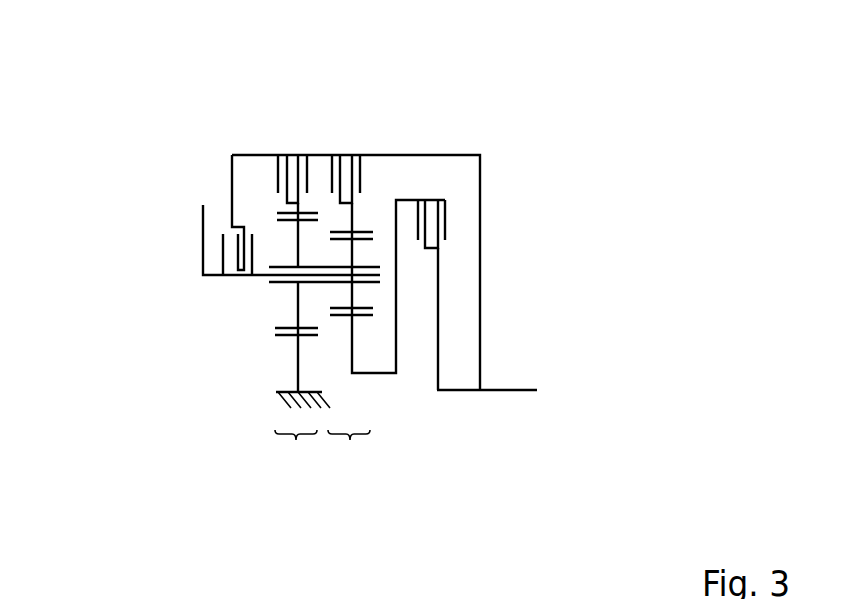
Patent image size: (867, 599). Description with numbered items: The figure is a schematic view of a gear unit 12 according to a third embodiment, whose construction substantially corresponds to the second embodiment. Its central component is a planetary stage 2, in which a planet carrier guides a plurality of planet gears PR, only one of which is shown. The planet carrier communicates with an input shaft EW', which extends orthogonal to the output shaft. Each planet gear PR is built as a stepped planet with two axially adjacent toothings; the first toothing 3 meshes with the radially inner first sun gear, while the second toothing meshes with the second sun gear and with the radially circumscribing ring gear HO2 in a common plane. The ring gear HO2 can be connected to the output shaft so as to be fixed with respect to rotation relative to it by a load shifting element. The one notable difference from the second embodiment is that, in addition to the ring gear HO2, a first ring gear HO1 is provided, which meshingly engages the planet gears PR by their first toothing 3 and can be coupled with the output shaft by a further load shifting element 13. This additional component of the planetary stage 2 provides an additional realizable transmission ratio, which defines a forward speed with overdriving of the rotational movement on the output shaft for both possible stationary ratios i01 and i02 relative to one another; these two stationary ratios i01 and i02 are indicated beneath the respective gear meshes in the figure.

The gear unit 12 is at (165, 123).
The load shifting element 13 is at (292, 153).
The planetary stage 2 is at (323, 139).
The first ring gear HO1 is at (286, 213).
The ring gear HO2 is at (354, 232).
The input shaft EW' is at (211, 235).
The planet gears PR is at (283, 283).
The first toothing 3 is at (288, 332).
The first stationary ratio i01 is at (296, 455).
The second stationary ratio i02 is at (349, 455).